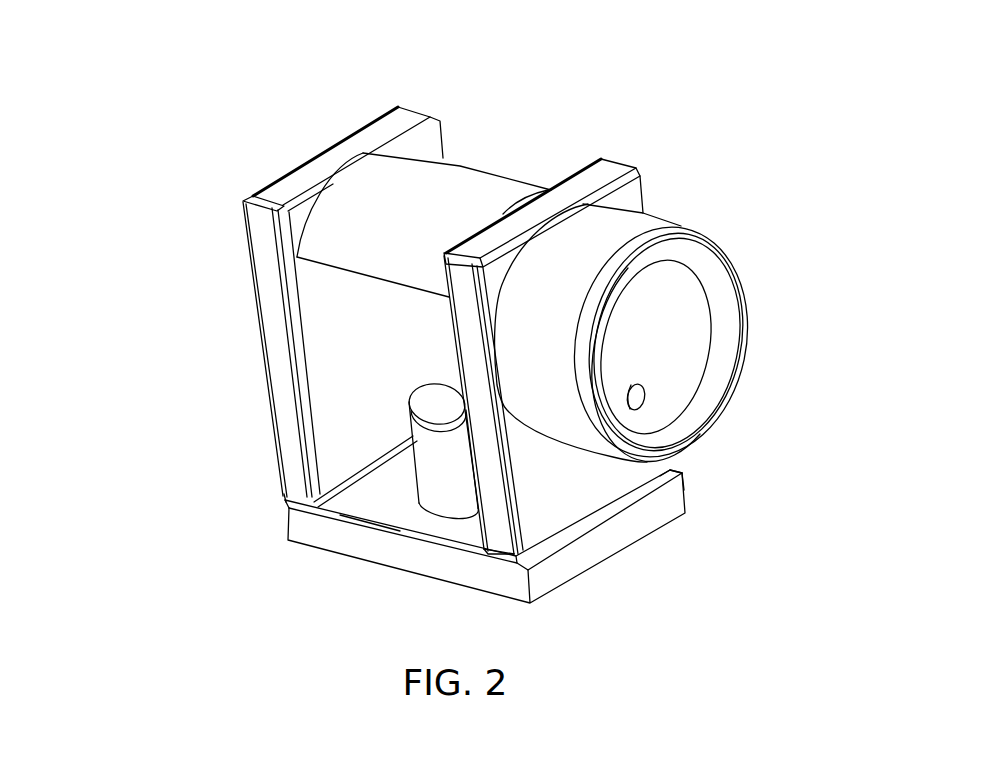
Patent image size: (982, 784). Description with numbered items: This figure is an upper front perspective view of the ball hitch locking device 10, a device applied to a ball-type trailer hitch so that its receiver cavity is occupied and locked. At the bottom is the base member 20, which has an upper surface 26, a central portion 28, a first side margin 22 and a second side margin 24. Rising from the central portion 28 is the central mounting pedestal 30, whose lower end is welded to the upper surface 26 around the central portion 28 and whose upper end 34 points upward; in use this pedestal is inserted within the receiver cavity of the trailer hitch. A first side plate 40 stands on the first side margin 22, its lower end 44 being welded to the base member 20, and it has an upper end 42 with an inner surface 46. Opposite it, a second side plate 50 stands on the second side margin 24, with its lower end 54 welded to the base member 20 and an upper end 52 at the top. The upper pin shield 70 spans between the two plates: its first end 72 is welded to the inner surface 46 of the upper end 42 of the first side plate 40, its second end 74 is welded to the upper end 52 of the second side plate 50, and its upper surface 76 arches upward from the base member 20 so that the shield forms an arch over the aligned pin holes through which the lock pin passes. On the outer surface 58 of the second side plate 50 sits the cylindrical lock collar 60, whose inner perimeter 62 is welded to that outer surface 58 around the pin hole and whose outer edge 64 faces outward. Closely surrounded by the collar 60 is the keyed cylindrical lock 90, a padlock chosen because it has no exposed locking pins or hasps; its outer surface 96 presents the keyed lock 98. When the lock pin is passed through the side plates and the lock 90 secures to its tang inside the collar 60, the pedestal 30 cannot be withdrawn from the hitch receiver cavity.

The ball hitch locking device 10 is at (855, 282).
The base member 20 is at (596, 566).
The first side margin 22 is at (284, 497).
The second side margin 24 is at (678, 467).
The upper surface 26 is at (368, 495).
The central portion 28 is at (412, 505).
The central mounting pedestal 30 is at (314, 459).
The upper end 34 is at (447, 392).
The first side plate 40 is at (432, 333).
The upper end 42 is at (302, 177).
The lower end 44 is at (225, 346).
The inner surface 46 is at (481, 248).
The second side plate 50 is at (589, 158).
The upper end 52 is at (606, 172).
The lower end 54 is at (500, 540).
The outer surface 58 is at (500, 436).
The cylindrical lock collar 60 is at (750, 351).
The inner perimeter 62 is at (582, 216).
The outer edge 64 is at (752, 285).
The upper pin shield 70 is at (358, 180).
The first end 72 is at (245, 196).
The second end 74 is at (520, 205).
The upper surface 76 is at (416, 198).
The keyed cylindrical lock 90 is at (716, 275).
The outer surface 96 is at (670, 340).
The keyed lock 98 is at (645, 396).